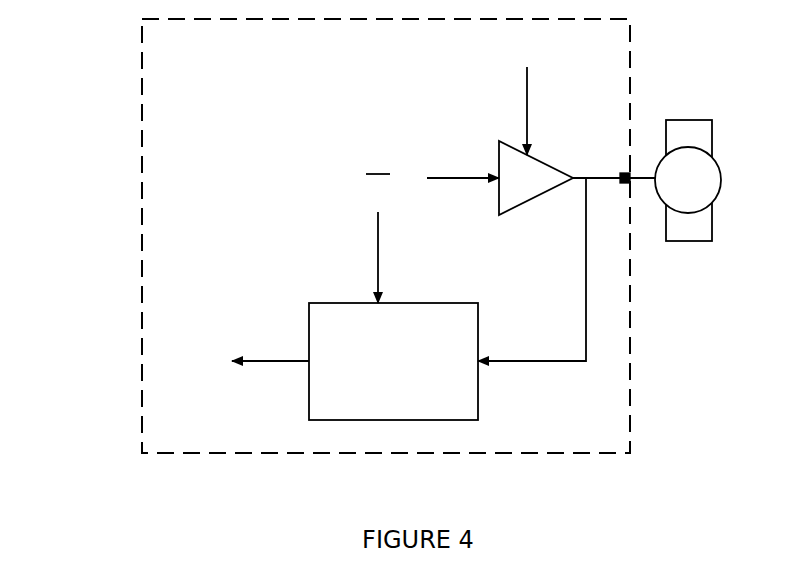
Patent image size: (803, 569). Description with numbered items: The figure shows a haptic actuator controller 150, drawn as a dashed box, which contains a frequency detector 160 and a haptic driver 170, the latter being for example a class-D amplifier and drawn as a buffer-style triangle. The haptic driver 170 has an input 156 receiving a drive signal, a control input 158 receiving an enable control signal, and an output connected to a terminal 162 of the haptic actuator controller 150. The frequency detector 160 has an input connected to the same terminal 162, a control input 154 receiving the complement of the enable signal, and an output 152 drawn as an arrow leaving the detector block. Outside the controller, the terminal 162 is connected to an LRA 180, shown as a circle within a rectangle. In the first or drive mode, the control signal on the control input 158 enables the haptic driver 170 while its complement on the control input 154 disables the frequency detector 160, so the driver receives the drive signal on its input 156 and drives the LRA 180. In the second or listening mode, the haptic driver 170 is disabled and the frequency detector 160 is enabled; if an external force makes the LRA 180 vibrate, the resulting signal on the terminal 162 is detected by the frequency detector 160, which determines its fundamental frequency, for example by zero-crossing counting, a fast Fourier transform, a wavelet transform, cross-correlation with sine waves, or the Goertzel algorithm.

The haptic actuator controller 150 is at (142, 388).
The frequency detector output 152 is at (272, 361).
The frequency detector control input 154 is at (378, 242).
The haptic driver input 156 is at (451, 177).
The haptic driver control input 158 is at (525, 93).
The frequency detector 160 is at (332, 303).
The terminal 162 is at (625, 172).
The haptic driver 170 is at (551, 196).
The LRA 180 is at (722, 180).